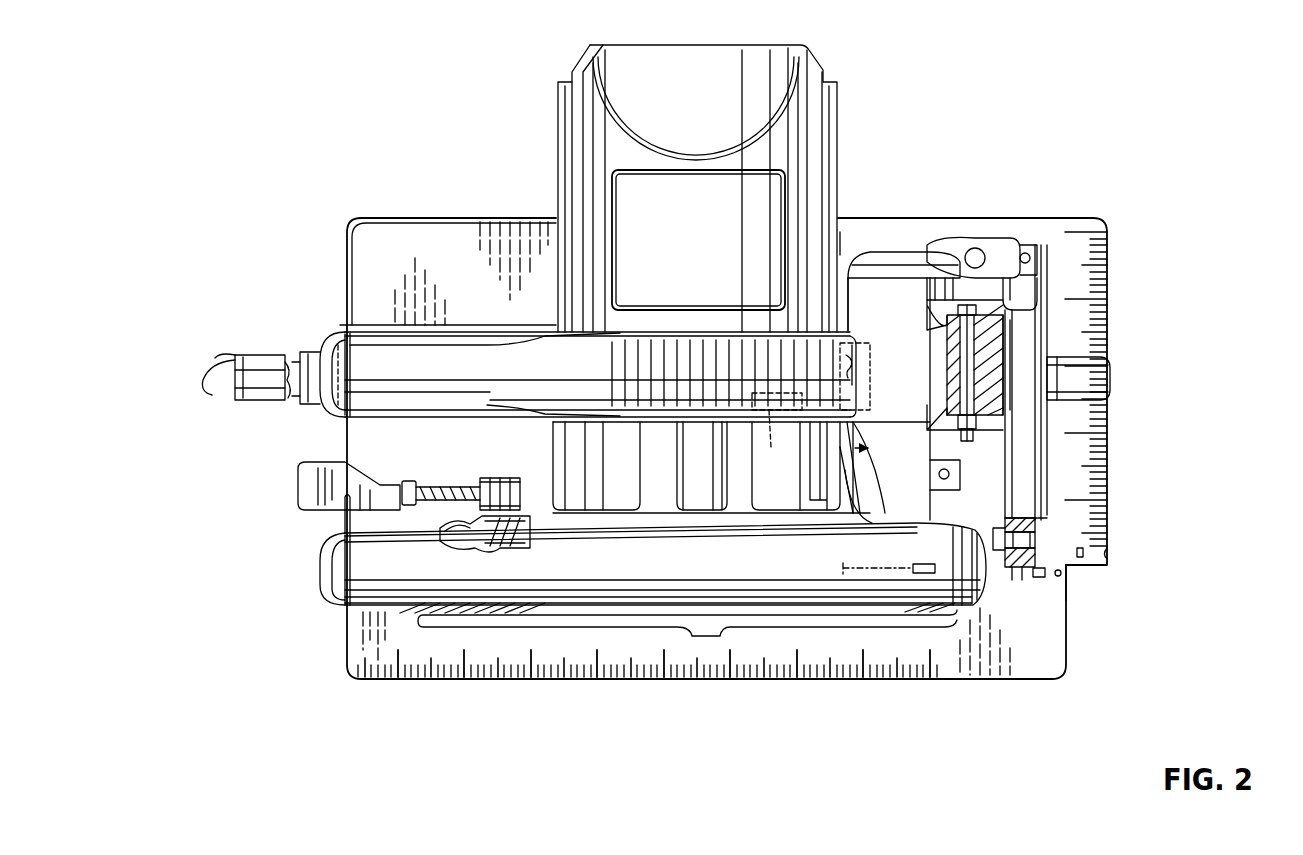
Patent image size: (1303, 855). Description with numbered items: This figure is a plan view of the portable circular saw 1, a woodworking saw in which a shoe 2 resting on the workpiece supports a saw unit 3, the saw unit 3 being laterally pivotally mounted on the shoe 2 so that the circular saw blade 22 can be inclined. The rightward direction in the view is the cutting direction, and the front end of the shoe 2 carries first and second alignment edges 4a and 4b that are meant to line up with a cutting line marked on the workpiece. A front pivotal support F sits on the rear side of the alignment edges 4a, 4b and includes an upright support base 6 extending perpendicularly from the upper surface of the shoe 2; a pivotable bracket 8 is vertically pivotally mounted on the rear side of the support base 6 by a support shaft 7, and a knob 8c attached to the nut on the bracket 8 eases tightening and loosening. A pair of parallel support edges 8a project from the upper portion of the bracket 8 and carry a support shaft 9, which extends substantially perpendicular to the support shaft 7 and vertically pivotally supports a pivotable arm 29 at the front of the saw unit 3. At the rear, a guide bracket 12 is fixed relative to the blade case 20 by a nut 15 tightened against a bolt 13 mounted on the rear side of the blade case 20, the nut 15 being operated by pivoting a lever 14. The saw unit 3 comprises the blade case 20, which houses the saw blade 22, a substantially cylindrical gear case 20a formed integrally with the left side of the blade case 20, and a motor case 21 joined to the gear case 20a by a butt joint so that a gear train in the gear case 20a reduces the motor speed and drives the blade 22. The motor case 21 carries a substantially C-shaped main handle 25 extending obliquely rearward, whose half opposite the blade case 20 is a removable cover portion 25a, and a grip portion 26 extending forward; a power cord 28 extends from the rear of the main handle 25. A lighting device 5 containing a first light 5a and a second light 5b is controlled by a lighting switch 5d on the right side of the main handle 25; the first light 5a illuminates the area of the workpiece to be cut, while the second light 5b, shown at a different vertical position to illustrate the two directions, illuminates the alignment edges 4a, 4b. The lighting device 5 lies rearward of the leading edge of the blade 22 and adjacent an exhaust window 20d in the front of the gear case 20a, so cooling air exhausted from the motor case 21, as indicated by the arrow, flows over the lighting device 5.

The portable circular saw 1 is at (899, 153).
The shoe 2 is at (992, 680).
The saw unit 3 is at (838, 74).
The first alignment edge 4a is at (1087, 568).
The second alignment edge 4b is at (1106, 552).
The lighting device 5 is at (872, 362).
The first light 5a is at (864, 402).
The second light 5b is at (858, 368).
The lighting switch 5d is at (780, 513).
The support base 6 is at (1022, 476).
The support shaft 7 is at (1040, 578).
The pivotable bracket 8 is at (1020, 572).
The support edges 8a is at (987, 305).
The knob 8c is at (1080, 381).
The support shaft 9 is at (1008, 370).
The guide bracket 12 is at (348, 518).
The bolt 13 is at (447, 532).
The lever 14 is at (320, 481).
The nut 15 is at (593, 467).
The blade case 20 is at (605, 562).
The gear case 20a is at (368, 335).
The exhaust window 20d is at (898, 447).
The motor case 21 is at (602, 195).
The circular saw blade 22 is at (848, 577).
The main handle 25 is at (466, 360).
The cover portion 25a is at (660, 393).
The grip portion 26 is at (862, 276).
The power cord 28 is at (213, 389).
The pivotable arm 29 is at (1005, 337).
The front pivotal support F is at (1024, 296).